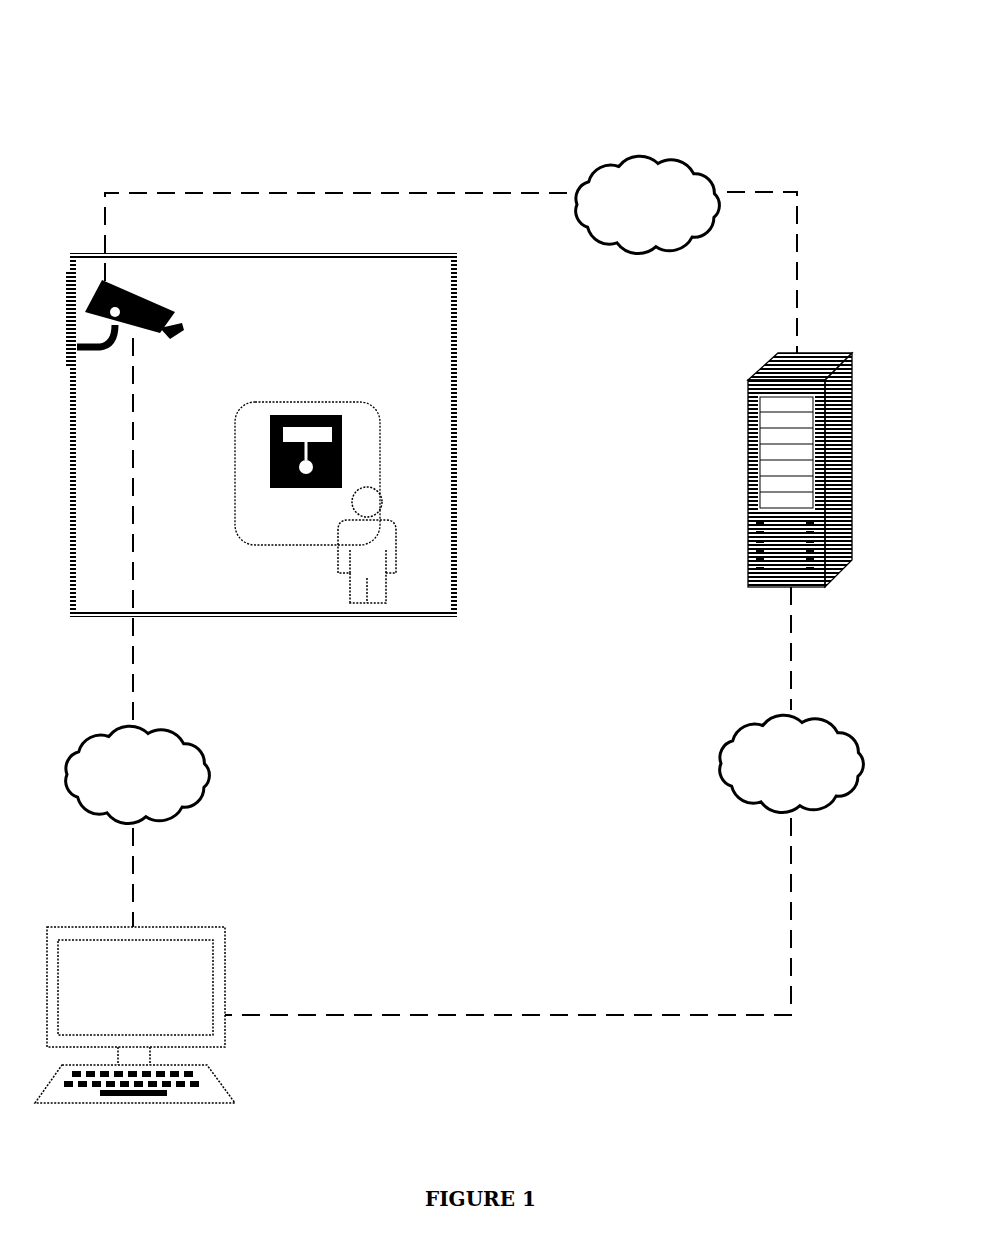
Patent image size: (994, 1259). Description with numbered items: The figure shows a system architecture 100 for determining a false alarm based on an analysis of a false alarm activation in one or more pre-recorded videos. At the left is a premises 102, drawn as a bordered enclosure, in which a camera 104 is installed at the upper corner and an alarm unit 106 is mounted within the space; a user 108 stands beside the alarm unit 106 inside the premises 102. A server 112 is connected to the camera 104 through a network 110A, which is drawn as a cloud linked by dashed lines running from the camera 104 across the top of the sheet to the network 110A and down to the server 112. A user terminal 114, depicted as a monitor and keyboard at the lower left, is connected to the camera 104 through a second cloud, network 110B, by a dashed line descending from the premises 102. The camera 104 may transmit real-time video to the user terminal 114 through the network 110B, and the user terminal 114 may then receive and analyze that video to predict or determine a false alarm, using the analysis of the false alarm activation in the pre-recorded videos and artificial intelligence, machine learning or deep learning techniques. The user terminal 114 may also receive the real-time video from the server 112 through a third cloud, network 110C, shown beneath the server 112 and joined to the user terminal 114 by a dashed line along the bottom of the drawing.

The system architecture 100 is at (480, 107).
The premises 102 is at (438, 255).
The camera 104 is at (143, 293).
The alarm unit 106 is at (336, 400).
The user 108 is at (388, 517).
The network 110A is at (688, 155).
The network 110B is at (177, 723).
The network 110C is at (830, 712).
The server 112 is at (815, 353).
The user terminal 114 is at (203, 925).